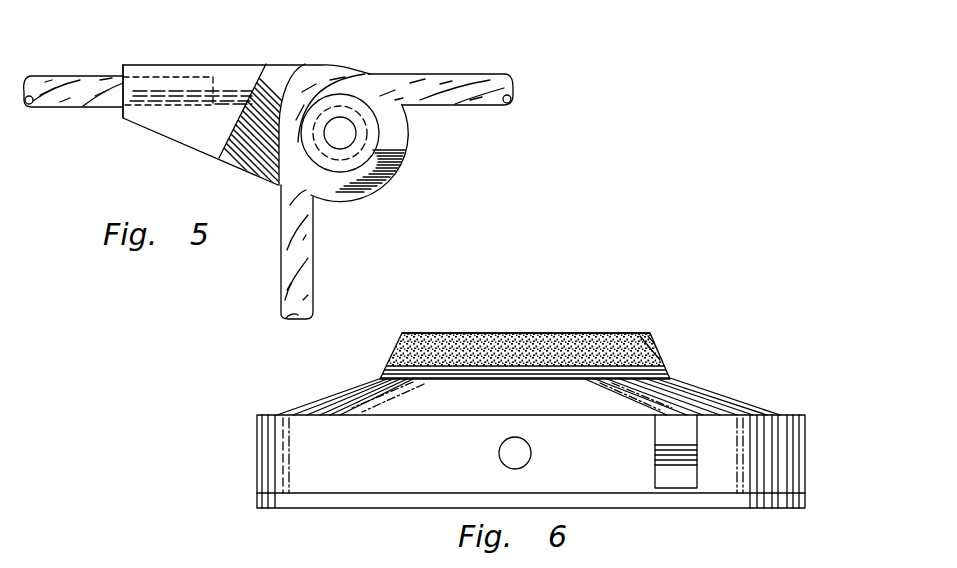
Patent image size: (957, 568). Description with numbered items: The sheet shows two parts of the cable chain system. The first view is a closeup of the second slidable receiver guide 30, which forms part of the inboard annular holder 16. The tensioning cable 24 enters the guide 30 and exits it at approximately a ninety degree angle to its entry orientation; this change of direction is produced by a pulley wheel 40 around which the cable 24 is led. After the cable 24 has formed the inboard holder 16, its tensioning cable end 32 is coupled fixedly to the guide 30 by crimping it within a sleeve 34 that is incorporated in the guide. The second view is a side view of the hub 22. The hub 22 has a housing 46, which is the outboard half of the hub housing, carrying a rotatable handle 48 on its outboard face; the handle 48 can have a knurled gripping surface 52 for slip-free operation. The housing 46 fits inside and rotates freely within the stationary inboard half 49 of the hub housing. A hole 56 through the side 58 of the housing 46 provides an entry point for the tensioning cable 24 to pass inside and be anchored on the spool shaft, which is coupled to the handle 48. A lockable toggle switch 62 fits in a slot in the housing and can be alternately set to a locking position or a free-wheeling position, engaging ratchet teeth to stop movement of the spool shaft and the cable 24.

In FIG. 5, the inboard annular holder 16 is at (45, 80).
In FIG. 6, the hub 22 is at (557, 396).
In FIG. 5, the tensioning cable 24 is at (308, 287).
In FIG. 5, the second slidable receiver guide 30 is at (211, 135).
In FIG. 5, the tensioning cable end 32 is at (172, 77).
In FIG. 5, the sleeve 34 is at (118, 63).
In FIG. 5, the pulley wheel 40 is at (377, 148).
In FIG. 6, the housing 46 is at (722, 397).
In FIG. 6, the rotatable handle 48 is at (525, 356).
In FIG. 6, the inboard half 49 is at (805, 440).
In FIG. 6, the knurled gripping surface 52 is at (462, 340).
In FIG. 6, the hole 56 is at (512, 452).
In FIG. 6, the side 58 is at (376, 465).
In FIG. 6, the lockable toggle switch 62 is at (673, 458).